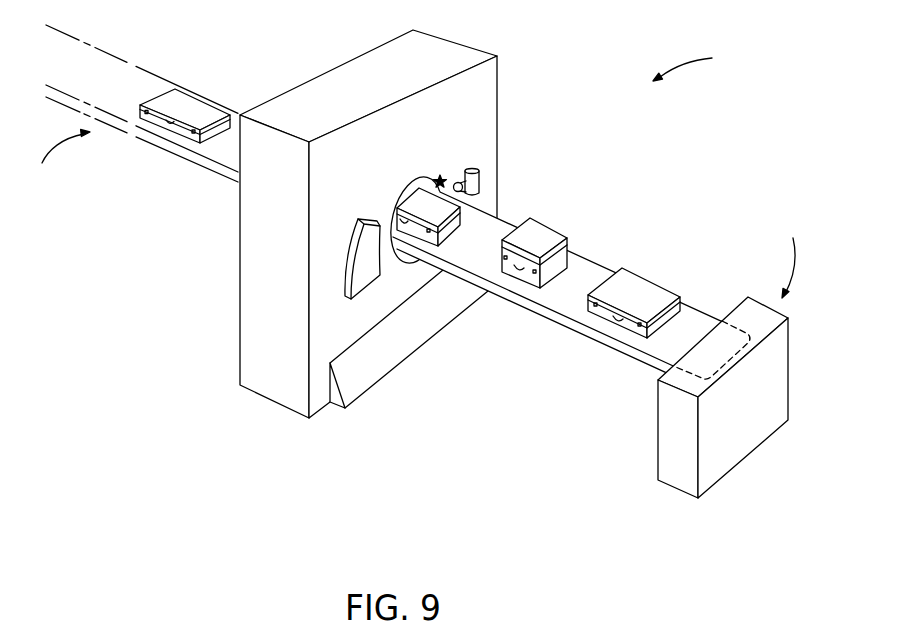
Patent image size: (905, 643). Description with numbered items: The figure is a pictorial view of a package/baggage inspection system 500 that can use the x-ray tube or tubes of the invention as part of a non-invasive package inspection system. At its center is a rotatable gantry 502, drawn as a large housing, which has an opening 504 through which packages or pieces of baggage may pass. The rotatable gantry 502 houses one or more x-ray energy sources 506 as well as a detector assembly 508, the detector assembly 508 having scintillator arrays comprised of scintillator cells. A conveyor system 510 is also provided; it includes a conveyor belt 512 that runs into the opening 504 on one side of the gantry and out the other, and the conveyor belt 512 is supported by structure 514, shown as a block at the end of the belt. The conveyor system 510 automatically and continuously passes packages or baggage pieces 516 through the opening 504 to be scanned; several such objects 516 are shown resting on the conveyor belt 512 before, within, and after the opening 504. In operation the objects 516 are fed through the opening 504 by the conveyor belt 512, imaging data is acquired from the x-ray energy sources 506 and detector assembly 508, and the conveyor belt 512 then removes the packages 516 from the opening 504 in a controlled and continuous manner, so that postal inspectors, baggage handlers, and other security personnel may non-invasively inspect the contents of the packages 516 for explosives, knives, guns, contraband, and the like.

The package/baggage inspection system 500 is at (703, 64).
The rotatable gantry 502 is at (463, 134).
The opening 504 is at (445, 178).
The x-ray energy source 506 is at (481, 184).
The detector assembly 508 is at (367, 217).
The conveyor system 510 is at (414, 214).
The conveyor belt 512 is at (213, 153).
The structure 514 is at (773, 375).
The packages or baggage pieces 516 is at (193, 108).